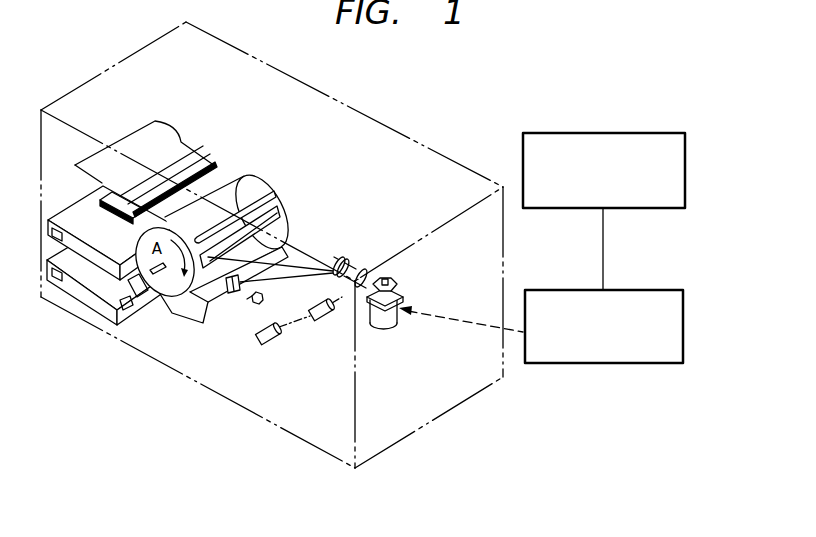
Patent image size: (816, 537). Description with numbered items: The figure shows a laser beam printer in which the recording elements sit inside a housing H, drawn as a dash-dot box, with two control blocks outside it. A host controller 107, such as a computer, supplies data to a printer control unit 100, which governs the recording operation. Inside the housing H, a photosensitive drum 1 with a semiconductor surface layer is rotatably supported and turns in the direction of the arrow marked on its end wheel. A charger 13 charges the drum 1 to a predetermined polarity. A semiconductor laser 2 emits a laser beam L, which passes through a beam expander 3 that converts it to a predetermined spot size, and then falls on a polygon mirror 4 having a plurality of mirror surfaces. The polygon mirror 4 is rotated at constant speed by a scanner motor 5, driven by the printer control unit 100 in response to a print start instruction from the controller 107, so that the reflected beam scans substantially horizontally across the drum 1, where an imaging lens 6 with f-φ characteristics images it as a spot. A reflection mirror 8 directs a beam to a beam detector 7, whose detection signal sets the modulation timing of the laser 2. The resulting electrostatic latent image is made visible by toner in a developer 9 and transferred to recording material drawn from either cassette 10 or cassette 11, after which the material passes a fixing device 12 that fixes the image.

The photosensitive drum 1 is at (250, 173).
The semiconductor laser 2 is at (272, 342).
The beam expander 3 is at (330, 319).
The polygon mirror 4 is at (396, 286).
The scanner motor 5 is at (396, 316).
The imaging lens 6 is at (353, 266).
The beam detector 7 is at (258, 303).
The reflection mirror 8 is at (228, 291).
The developer 9 is at (182, 318).
The cassette 10 is at (77, 247).
The cassette 11 is at (77, 292).
The fixing device 12 is at (102, 212).
The charger 13 is at (278, 192).
The printer control unit 100 is at (655, 368).
The host controller 107 is at (651, 133).
The housing H is at (240, 47).
The laser beam L is at (297, 320).